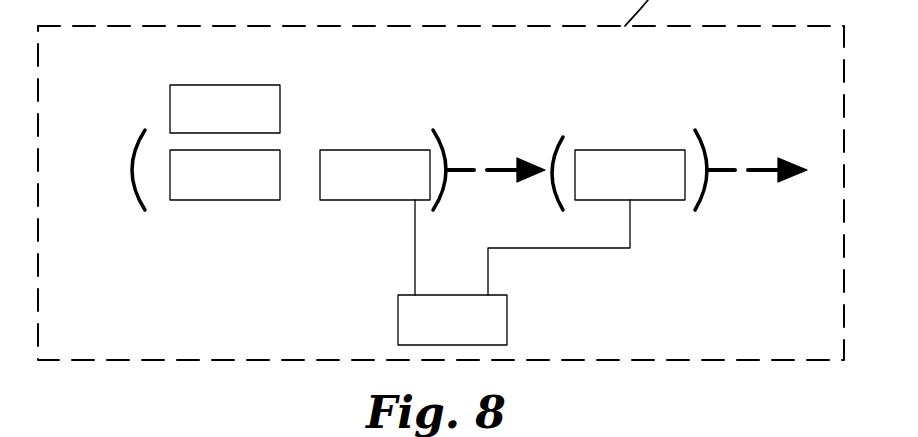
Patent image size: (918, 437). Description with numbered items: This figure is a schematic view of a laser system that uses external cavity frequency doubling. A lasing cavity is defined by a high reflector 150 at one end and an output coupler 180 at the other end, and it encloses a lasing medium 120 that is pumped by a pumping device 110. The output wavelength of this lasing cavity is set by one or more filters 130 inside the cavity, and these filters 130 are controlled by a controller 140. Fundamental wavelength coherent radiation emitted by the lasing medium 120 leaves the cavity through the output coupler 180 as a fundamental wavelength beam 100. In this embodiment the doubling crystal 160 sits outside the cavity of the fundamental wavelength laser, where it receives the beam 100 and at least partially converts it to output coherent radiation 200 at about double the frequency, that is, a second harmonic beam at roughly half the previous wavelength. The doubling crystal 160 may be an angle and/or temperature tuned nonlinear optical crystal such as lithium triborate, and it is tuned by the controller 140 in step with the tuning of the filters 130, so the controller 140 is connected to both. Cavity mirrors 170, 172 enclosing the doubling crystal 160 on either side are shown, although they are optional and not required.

The fundamental wavelength beam 100 is at (490, 172).
The pumping device 110 is at (273, 85).
The lasing medium 120 is at (208, 200).
The filters 130 is at (342, 200).
The controller 140 is at (398, 295).
The high reflector 150 is at (136, 147).
The doubling crystal 160 is at (640, 150).
The cavity mirror 170 is at (560, 137).
The cavity mirror 172 is at (697, 135).
The output coupler 180 is at (440, 140).
The output coherent radiation 200 is at (723, 173).